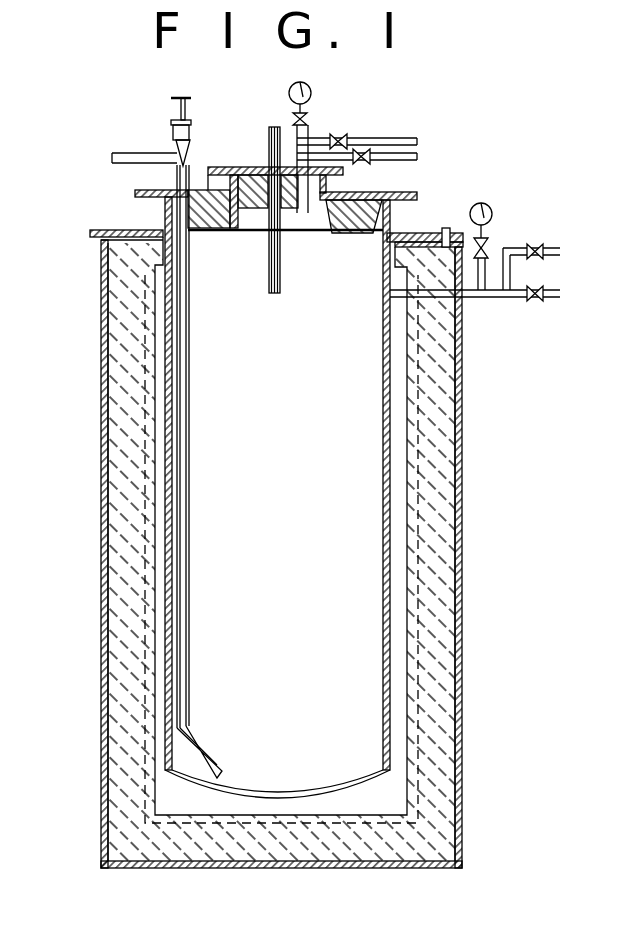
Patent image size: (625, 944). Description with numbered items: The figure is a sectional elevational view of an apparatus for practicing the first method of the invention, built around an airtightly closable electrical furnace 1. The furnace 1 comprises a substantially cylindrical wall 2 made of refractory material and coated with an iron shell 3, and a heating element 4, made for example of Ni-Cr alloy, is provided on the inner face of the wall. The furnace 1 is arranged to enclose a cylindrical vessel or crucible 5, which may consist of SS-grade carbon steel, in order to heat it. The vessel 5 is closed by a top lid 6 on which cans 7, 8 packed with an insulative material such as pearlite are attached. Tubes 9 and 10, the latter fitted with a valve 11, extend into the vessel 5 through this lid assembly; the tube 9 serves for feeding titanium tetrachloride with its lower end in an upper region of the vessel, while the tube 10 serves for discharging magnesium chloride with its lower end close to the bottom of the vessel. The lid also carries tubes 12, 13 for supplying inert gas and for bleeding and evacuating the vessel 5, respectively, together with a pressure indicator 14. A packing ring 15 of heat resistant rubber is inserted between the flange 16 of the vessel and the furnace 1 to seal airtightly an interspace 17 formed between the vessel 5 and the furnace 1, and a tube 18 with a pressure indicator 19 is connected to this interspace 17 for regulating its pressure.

The electrical furnace 1 is at (462, 817).
The cylindrical wall 2 is at (440, 663).
The iron shell 3 is at (460, 558).
The heating element 4 is at (418, 500).
The cylindrical vessel 5 is at (395, 455).
The top lid 6 is at (405, 195).
The can 7 is at (235, 180).
The can 8 is at (200, 200).
The tube 9 is at (274, 127).
The tube 10 is at (185, 612).
The valve 11 is at (180, 98).
The tube 12 is at (398, 138).
The tube 13 is at (415, 155).
The pressure indicator 14 is at (312, 92).
The packing ring 15 is at (450, 232).
The flange 16 is at (422, 235).
The interspace 17 is at (398, 412).
The tube 18 is at (498, 297).
The pressure indicator 19 is at (494, 212).